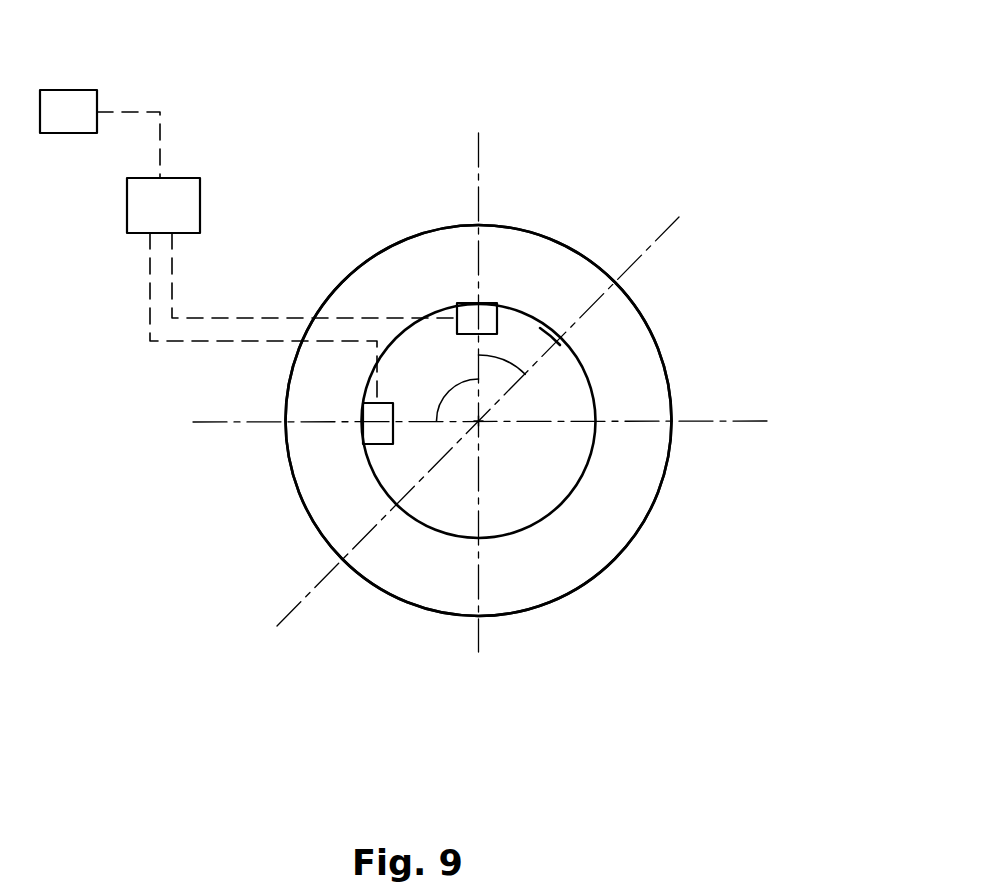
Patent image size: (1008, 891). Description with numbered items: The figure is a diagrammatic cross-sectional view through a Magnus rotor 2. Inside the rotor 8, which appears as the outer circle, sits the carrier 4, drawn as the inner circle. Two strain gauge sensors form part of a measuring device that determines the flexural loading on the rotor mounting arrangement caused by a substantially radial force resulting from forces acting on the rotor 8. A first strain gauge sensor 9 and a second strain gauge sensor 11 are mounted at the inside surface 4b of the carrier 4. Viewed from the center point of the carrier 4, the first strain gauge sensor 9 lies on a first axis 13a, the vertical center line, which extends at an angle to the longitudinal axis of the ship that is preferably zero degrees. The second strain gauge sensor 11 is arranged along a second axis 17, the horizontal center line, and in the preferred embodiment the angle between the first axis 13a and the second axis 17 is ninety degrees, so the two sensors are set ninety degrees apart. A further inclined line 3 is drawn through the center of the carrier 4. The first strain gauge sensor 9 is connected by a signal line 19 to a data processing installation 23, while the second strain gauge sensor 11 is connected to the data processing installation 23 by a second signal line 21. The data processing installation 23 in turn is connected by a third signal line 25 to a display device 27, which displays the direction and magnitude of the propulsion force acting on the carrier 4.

The Magnus rotor 2 is at (797, 225).
The reference line through rotor position 3 is at (667, 225).
The carrier 4 is at (597, 389).
The inside surface 4b is at (536, 347).
The rotor 8 is at (661, 500).
The first strain gauge sensor 9 is at (499, 304).
The second strain gauge sensor 11 is at (363, 436).
The first axis 13a is at (477, 152).
The second axis 17 is at (208, 424).
The signal line 19 is at (256, 318).
The second signal line 21 is at (150, 288).
The data processing installation 23 is at (148, 212).
The third signal line 25 is at (161, 142).
The display device 27 is at (97, 98).